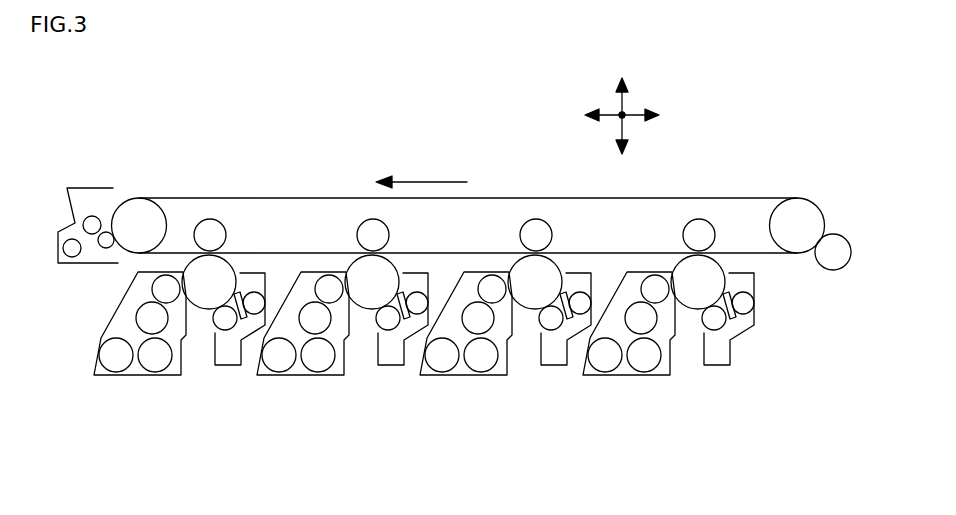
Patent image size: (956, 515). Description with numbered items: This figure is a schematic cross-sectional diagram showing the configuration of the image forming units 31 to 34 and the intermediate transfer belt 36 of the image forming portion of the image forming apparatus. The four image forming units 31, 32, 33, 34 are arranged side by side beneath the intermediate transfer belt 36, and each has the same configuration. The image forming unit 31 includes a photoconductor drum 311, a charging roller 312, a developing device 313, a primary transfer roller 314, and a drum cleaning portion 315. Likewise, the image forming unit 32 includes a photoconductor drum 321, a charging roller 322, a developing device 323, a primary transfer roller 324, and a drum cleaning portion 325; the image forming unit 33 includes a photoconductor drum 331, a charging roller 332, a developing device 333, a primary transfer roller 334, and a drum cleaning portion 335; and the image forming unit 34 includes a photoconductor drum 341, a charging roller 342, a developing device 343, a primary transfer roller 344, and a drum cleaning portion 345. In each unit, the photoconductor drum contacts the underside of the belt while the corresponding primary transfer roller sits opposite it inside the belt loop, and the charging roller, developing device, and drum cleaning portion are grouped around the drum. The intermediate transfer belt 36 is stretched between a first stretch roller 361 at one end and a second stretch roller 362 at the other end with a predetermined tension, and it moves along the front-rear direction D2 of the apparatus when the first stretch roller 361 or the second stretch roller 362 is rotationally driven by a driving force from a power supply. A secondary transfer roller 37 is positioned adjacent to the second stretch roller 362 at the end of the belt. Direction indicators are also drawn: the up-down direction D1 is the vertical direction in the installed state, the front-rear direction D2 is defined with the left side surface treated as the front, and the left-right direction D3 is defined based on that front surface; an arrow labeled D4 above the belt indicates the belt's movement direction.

The image forming unit 31 is at (197, 329).
The image forming unit 32 is at (360, 329).
The image forming unit 33 is at (523, 329).
The image forming unit 34 is at (686, 329).
The photoconductor drum 311 is at (207, 307).
The charging roller 312 is at (230, 351).
The developing device 313 is at (140, 343).
The primary transfer roller 314 is at (237, 235).
The drum cleaning portion 315 is at (267, 287).
The photoconductor drum 321 is at (370, 307).
The charging roller 322 is at (393, 351).
The developing device 323 is at (303, 343).
The primary transfer roller 324 is at (400, 235).
The drum cleaning portion 325 is at (430, 287).
The photoconductor drum 331 is at (533, 307).
The charging roller 332 is at (556, 351).
The developing device 333 is at (466, 343).
The primary transfer roller 334 is at (563, 235).
The drum cleaning portion 335 is at (593, 287).
The photoconductor drum 341 is at (696, 307).
The charging roller 342 is at (719, 351).
The developing device 343 is at (629, 343).
The primary transfer roller 344 is at (726, 235).
The drum cleaning portion 345 is at (756, 287).
The intermediate transfer belt 36 is at (468, 199).
The first stretch roller 361 is at (160, 203).
The second stretch roller 362 is at (781, 204).
The secondary transfer roller 37 is at (838, 234).
The up-down direction D1 is at (622, 100).
The front-rear direction D2 is at (612, 118).
The left-right direction D3 is at (632, 118).
The belt conveyance direction D4 is at (424, 181).